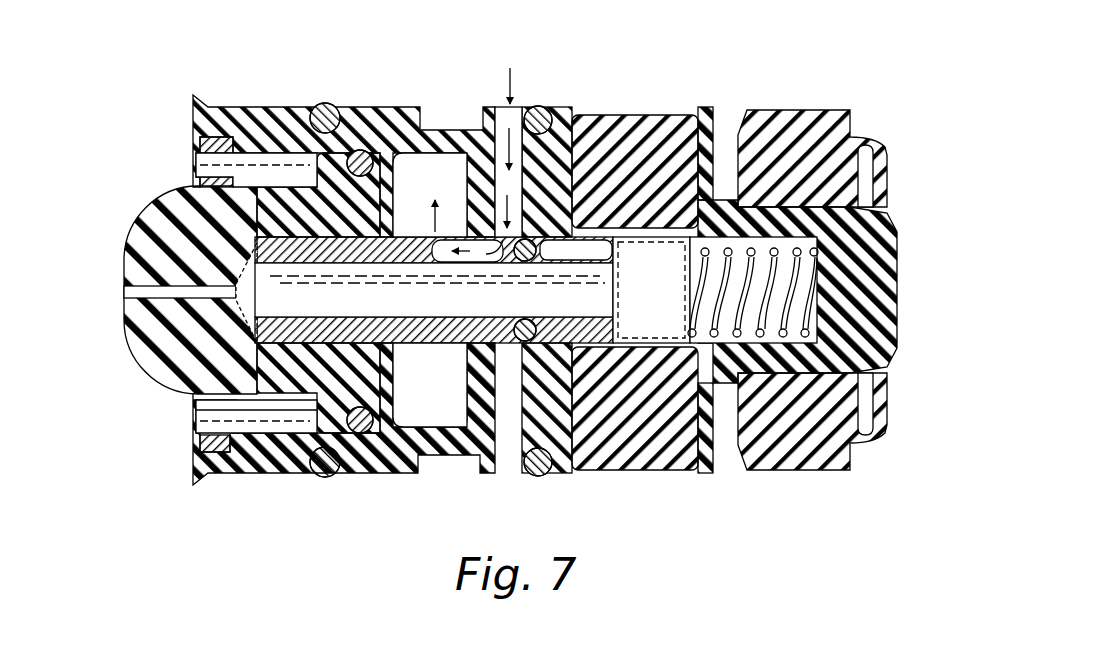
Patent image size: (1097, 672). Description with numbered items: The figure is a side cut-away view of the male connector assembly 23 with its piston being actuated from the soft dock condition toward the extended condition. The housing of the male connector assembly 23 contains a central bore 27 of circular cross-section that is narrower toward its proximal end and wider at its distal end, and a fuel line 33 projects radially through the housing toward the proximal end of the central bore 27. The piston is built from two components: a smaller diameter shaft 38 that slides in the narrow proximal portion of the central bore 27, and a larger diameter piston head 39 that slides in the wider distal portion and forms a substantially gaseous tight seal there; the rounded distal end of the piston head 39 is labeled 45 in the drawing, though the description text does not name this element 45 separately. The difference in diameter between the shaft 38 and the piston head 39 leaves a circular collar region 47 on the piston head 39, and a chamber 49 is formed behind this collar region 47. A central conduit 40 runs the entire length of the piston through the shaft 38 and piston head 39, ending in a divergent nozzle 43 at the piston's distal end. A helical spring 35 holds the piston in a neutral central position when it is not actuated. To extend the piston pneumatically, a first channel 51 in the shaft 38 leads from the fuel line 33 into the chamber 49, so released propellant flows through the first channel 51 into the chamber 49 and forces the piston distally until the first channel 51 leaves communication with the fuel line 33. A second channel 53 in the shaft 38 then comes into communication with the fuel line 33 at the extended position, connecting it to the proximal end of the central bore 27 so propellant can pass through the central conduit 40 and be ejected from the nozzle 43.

The male connector assembly 23 is at (826, 68).
The central bore 27 is at (356, 153).
The fuel line 33 is at (500, 107).
The helical spring 35 is at (845, 305).
The shaft 38 is at (426, 465).
The piston head 39 is at (255, 160).
The central conduit 40 is at (163, 294).
The divergent nozzle 43 is at (125, 294).
The ball end 45 is at (152, 215).
The collar region 47 is at (423, 165).
The chamber 49 is at (460, 415).
The first channel 51 is at (450, 243).
The second channel 53 is at (597, 245).